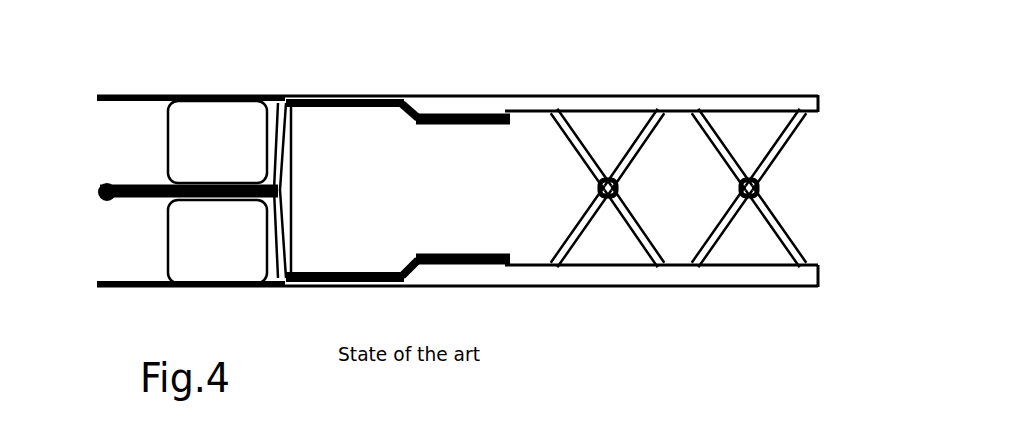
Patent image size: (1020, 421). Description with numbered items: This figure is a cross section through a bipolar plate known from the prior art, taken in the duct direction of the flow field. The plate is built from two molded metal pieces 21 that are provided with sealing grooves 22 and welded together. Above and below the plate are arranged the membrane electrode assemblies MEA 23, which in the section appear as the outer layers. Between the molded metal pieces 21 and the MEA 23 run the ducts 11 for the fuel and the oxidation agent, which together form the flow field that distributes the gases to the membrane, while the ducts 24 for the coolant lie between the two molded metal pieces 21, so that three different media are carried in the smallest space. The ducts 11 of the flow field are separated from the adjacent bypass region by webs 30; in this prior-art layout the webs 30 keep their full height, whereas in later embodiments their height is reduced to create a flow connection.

The ducts 11 is at (753, 243).
The molded metal pieces 21 is at (793, 227).
The sealing grooves 22 is at (110, 198).
The membrane electrode assemblies MEA 23 is at (475, 268).
The ducts for the coolant 24 is at (675, 157).
The webs 30 is at (572, 262).